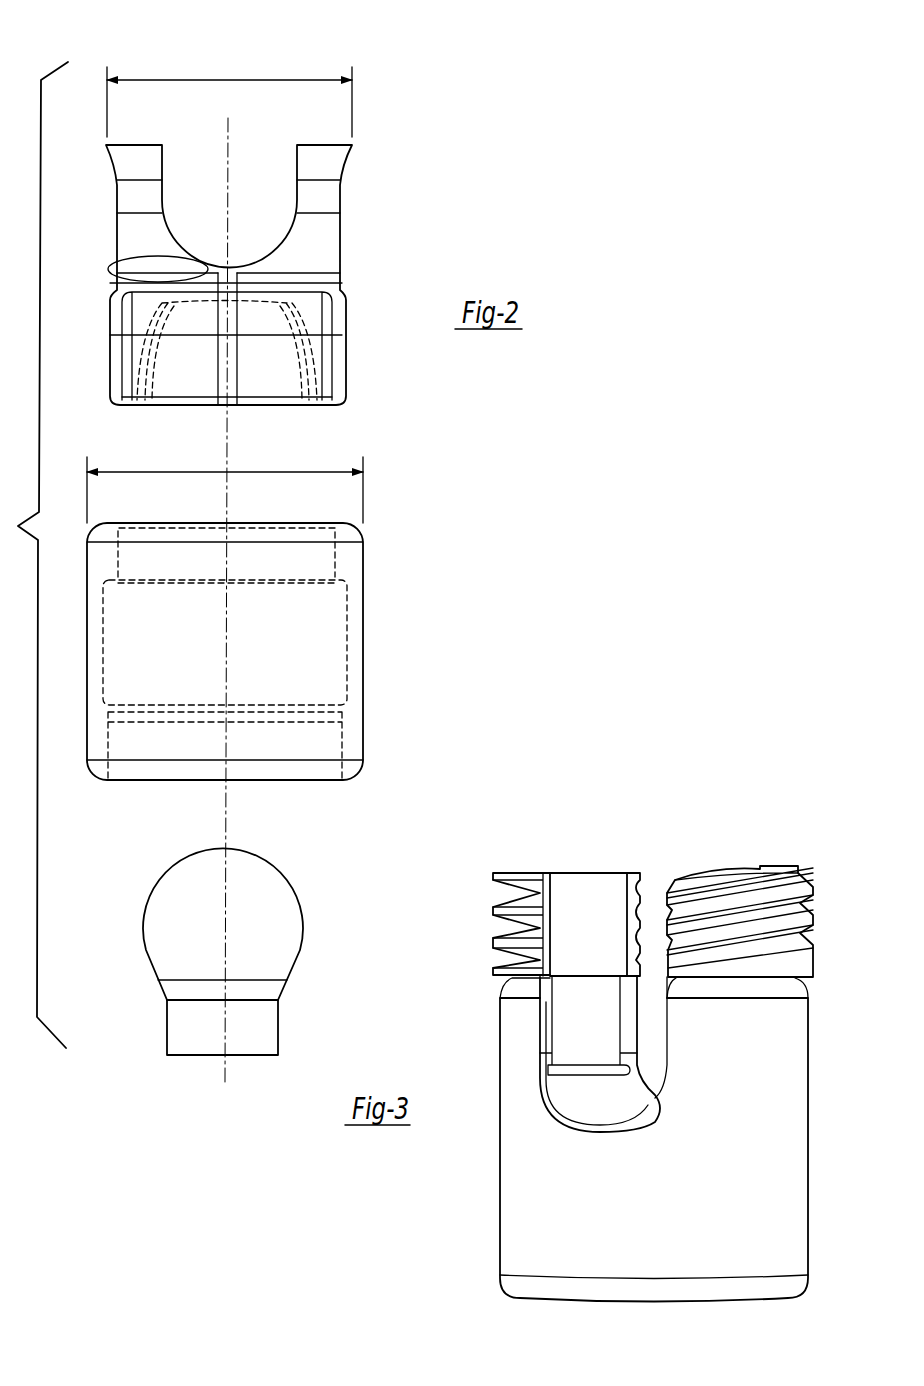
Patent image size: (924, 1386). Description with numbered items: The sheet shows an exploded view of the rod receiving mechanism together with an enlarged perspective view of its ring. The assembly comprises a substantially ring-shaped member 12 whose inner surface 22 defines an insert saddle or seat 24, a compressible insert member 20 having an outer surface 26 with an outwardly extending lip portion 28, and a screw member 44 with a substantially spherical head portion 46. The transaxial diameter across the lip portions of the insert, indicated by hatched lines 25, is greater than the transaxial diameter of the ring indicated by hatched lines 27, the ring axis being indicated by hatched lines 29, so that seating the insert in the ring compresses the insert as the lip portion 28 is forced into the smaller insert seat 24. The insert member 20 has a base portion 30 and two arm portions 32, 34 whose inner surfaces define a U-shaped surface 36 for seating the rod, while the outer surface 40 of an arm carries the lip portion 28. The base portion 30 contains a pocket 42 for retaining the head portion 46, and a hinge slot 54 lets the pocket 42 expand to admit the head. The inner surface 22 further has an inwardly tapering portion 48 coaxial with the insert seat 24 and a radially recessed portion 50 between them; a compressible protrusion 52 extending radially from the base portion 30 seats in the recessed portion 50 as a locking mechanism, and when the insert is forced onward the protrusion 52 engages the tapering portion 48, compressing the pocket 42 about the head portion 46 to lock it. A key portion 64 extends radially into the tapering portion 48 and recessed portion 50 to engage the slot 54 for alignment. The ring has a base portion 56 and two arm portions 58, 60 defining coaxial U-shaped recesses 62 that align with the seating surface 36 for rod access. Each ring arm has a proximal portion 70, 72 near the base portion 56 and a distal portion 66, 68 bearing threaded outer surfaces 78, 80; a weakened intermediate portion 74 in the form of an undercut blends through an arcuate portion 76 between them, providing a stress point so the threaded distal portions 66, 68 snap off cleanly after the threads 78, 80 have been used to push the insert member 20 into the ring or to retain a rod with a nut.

In FIG. 2, the ring-shaped member 12 is at (365, 710).
In FIG. 3, the ring-shaped member 12 is at (810, 1222).
In FIG. 2, the insert member 20 is at (342, 246).
In FIG. 2, the inner surface 22 is at (102, 632).
In FIG. 3, the insert seat 24 is at (580, 990).
In FIG. 2, the hatched lines 25 is at (290, 78).
In FIG. 2, the outer surface 26 is at (117, 238).
In FIG. 2, the hatched lines 27 is at (175, 470).
In FIG. 2, the lip portion 28 is at (345, 160).
In FIG. 2, the hatched lines 29 is at (228, 212).
In FIG. 2, the base portion 30 is at (345, 310).
In FIG. 2, the arm portion 32 is at (145, 160).
In FIG. 2, the arm portion 34 is at (318, 165).
In FIG. 2, the U-shaped surface 36 is at (205, 283).
In FIG. 2, the outer surface 40 is at (150, 263).
In FIG. 2, the pocket 42 is at (248, 390).
In FIG. 2, the screw member 44 is at (182, 1030).
In FIG. 2, the head portion 46 is at (275, 888).
In FIG. 2, the inwardly tapering portion 48 is at (345, 735).
In FIG. 3, the recessed portion 50 is at (640, 1108).
In FIG. 2, the compressible protrusion 52 is at (110, 316).
In FIG. 2, the hinge slot 54 is at (225, 340).
In FIG. 2, the base portion 56 is at (345, 640).
In FIG. 3, the base portion 56 is at (770, 1250).
In FIG. 3, the arm portion 58 is at (765, 1072).
In FIG. 2, the arm portion 60 is at (98, 548).
In FIG. 3, the arm portion 60 is at (500, 1045).
In FIG. 2, the U-shaped recesses 62 is at (275, 560).
In FIG. 3, the U-shaped recesses 62 is at (630, 1050).
In FIG. 2, the key portion 64 is at (222, 703).
In FIG. 3, the distal portion 66 is at (715, 875).
In FIG. 3, the distal portion 68 is at (567, 873).
In FIG. 3, the proximal portion 70 is at (810, 1197).
In FIG. 3, the proximal portion 72 is at (500, 1150).
In FIG. 3, the weakened intermediate portion 74 is at (775, 978).
In FIG. 3, the arcuate portion 76 is at (697, 1003).
In FIG. 3, the threaded outer surface 78 is at (818, 925).
In FIG. 3, the threaded outer surface 80 is at (505, 950).